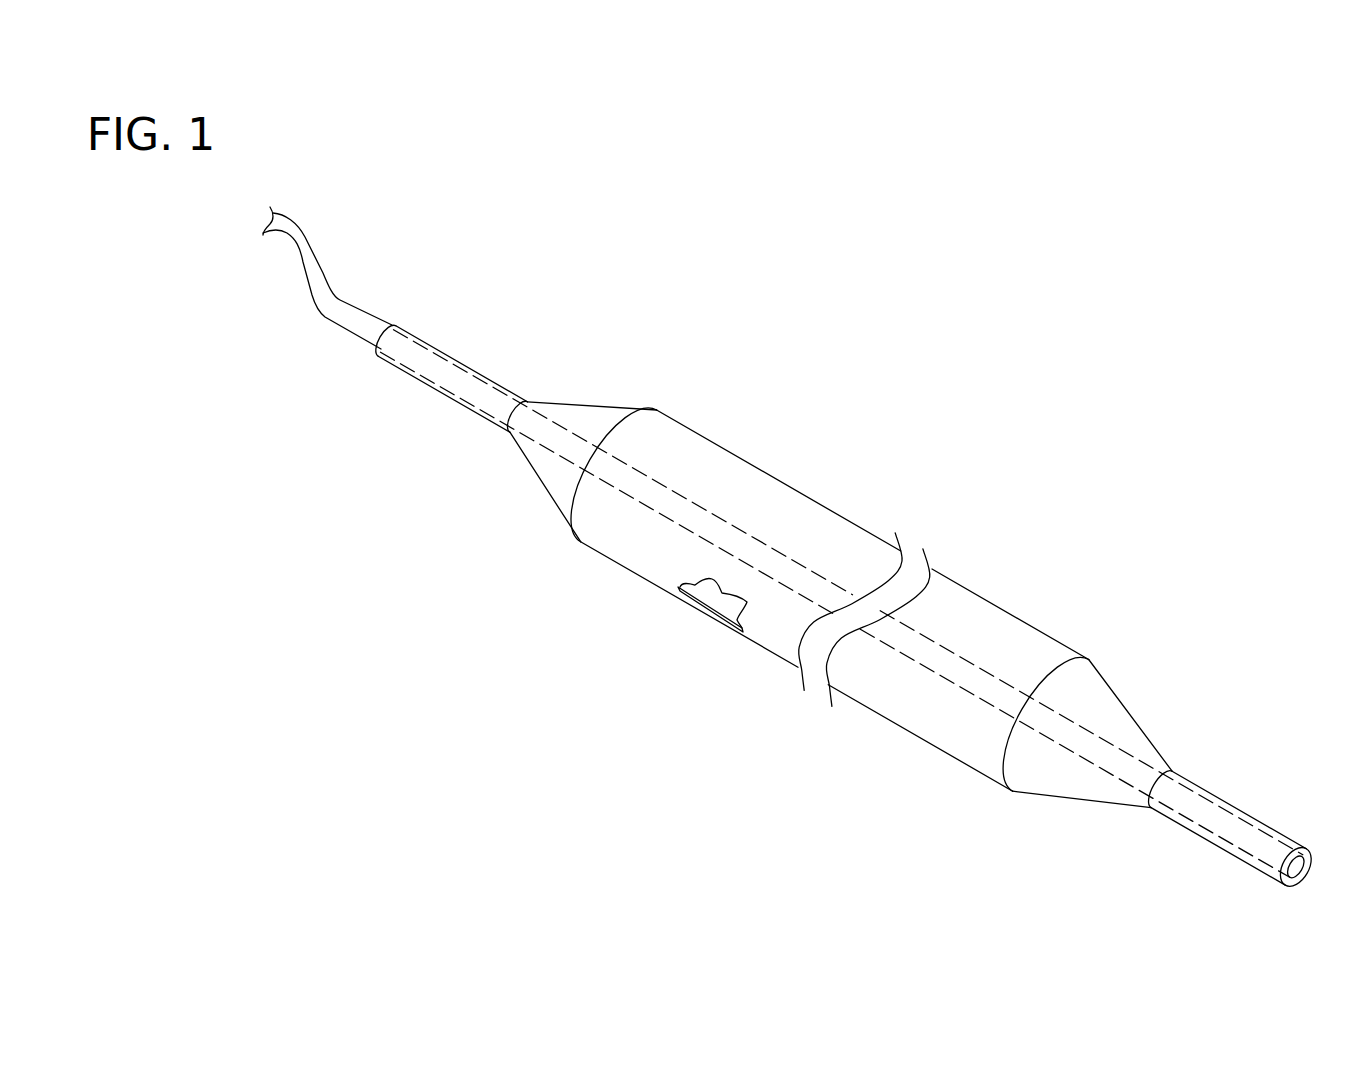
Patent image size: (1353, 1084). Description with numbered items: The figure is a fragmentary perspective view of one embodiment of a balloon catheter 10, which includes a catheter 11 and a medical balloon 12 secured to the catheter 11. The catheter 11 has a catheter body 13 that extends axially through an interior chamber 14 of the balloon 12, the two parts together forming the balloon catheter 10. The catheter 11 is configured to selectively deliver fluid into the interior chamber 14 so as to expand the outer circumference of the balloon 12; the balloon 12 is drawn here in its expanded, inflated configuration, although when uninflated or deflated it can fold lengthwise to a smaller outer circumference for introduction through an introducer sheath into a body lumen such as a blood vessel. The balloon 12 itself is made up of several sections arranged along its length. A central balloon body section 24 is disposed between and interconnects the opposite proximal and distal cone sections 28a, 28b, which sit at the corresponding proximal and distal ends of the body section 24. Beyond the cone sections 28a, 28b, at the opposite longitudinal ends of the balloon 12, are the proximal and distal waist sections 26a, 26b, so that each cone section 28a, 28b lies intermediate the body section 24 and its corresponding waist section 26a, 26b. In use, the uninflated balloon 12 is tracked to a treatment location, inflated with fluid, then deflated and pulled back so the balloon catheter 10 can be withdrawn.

The balloon catheter 10 is at (1064, 446).
The catheter 11 is at (290, 286).
The medical balloon 12 is at (800, 479).
The catheter body 13 is at (298, 234).
The interior chamber 14 is at (709, 606).
The balloon body section 24 is at (983, 633).
The proximal waist section 26a is at (1234, 815).
The distal waist section 26b is at (446, 354).
The proximal cone section 28a is at (1120, 727).
The distal cone section 28b is at (610, 398).